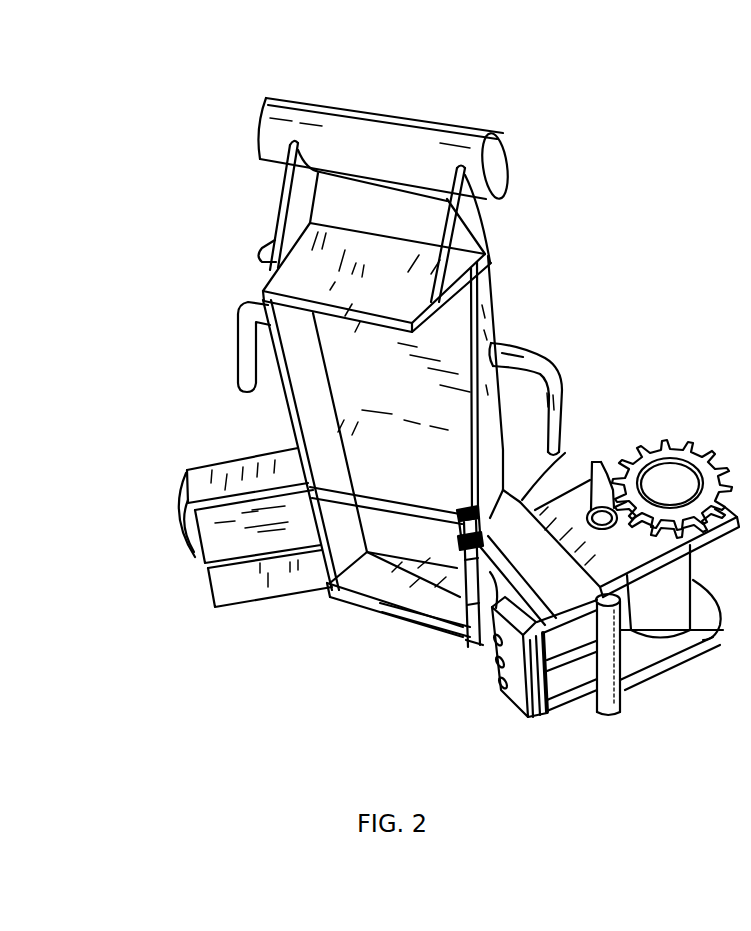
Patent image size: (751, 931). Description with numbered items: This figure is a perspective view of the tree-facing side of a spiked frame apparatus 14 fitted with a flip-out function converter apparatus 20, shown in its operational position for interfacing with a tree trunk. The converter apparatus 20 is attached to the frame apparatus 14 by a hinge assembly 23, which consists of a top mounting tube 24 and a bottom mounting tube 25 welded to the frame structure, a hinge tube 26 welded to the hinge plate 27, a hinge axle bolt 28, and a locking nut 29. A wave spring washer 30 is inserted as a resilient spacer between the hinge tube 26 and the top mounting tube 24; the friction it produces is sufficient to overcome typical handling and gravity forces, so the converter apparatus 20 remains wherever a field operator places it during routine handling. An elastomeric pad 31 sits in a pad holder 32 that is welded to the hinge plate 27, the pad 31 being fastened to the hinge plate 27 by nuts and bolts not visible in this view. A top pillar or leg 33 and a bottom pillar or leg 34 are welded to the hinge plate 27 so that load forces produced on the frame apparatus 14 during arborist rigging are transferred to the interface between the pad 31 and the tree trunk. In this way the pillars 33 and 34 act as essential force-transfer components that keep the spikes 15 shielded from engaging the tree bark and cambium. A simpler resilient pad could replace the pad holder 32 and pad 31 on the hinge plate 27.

The frame apparatus 14 is at (512, 266).
The spikes 15 is at (590, 712).
The flip-out function converter apparatus 20 is at (467, 670).
The hinge assembly 23 is at (357, 607).
The top mounting tube 24 is at (455, 514).
The bottom mounting tube 25 is at (463, 643).
The hinge tube 26 is at (418, 618).
The hinge plate 27 is at (629, 540).
The hinge axle bolt 28 is at (463, 507).
The locking nut 29 is at (467, 660).
The wave spring washer 30 is at (457, 534).
The elastomeric pad 31 is at (500, 705).
The pad holder 32 is at (539, 712).
The top pillar 33 is at (660, 673).
The bottom pillar 34 is at (640, 690).